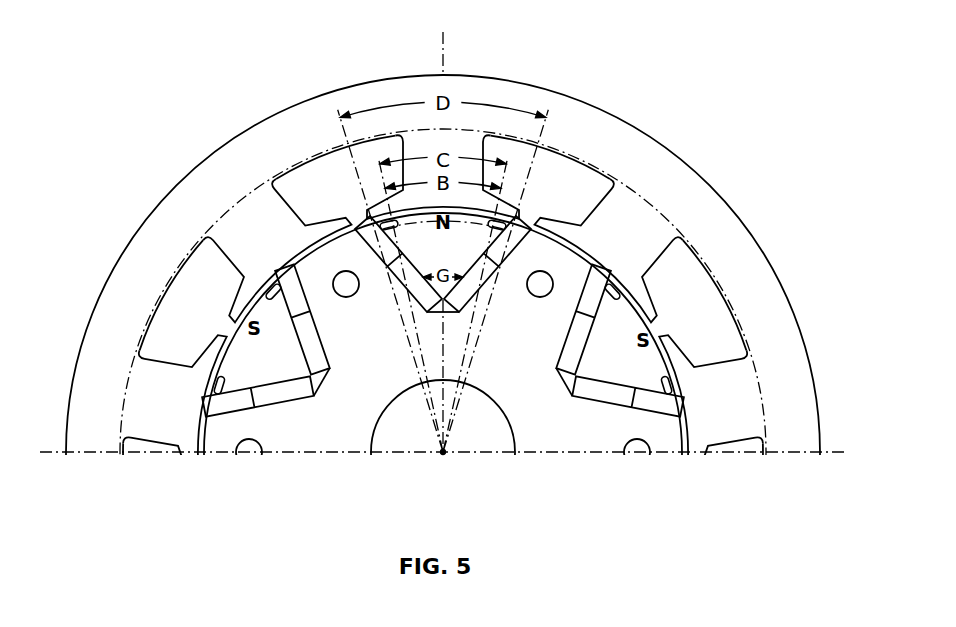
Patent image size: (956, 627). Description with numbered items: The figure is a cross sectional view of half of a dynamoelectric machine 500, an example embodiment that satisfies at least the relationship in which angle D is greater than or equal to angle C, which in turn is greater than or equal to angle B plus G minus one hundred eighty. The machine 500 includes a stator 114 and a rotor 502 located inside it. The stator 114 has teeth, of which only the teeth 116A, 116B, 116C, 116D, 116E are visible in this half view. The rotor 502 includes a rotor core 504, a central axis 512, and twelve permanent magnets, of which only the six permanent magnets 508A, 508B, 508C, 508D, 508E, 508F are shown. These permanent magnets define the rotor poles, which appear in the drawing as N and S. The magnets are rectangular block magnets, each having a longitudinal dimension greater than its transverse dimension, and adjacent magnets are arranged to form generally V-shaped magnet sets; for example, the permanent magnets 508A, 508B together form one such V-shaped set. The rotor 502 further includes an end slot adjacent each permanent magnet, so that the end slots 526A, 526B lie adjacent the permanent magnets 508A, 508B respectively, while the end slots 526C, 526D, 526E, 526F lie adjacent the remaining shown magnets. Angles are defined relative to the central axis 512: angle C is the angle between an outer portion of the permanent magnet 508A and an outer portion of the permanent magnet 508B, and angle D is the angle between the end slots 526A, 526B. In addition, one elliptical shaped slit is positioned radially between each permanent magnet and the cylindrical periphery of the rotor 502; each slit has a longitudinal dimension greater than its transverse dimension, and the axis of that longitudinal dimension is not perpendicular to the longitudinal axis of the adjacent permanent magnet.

The dynamoelectric machine 500 is at (733, 62).
The stator 114 is at (758, 237).
The tooth 116A is at (167, 403).
The tooth 116B is at (238, 204).
The tooth 116C is at (458, 137).
The tooth 116D is at (648, 204).
The tooth 116E is at (719, 403).
The rotor 502 is at (488, 496).
The rotor core 504 is at (531, 391).
The permanent magnet 508A is at (404, 262).
The permanent magnet 508B is at (465, 297).
The permanent magnet 508C is at (561, 339).
The permanent magnet 508D is at (613, 395).
The permanent magnet 508E is at (273, 395).
The permanent magnet 508F is at (310, 343).
The central axis 512 is at (443, 456).
The end slot 526A is at (262, 247).
The end slot 526B is at (624, 247).
The end slot 526C is at (588, 282).
The end slot 526D is at (664, 402).
The end slot 526E is at (223, 405).
The end slot 526F is at (305, 293).